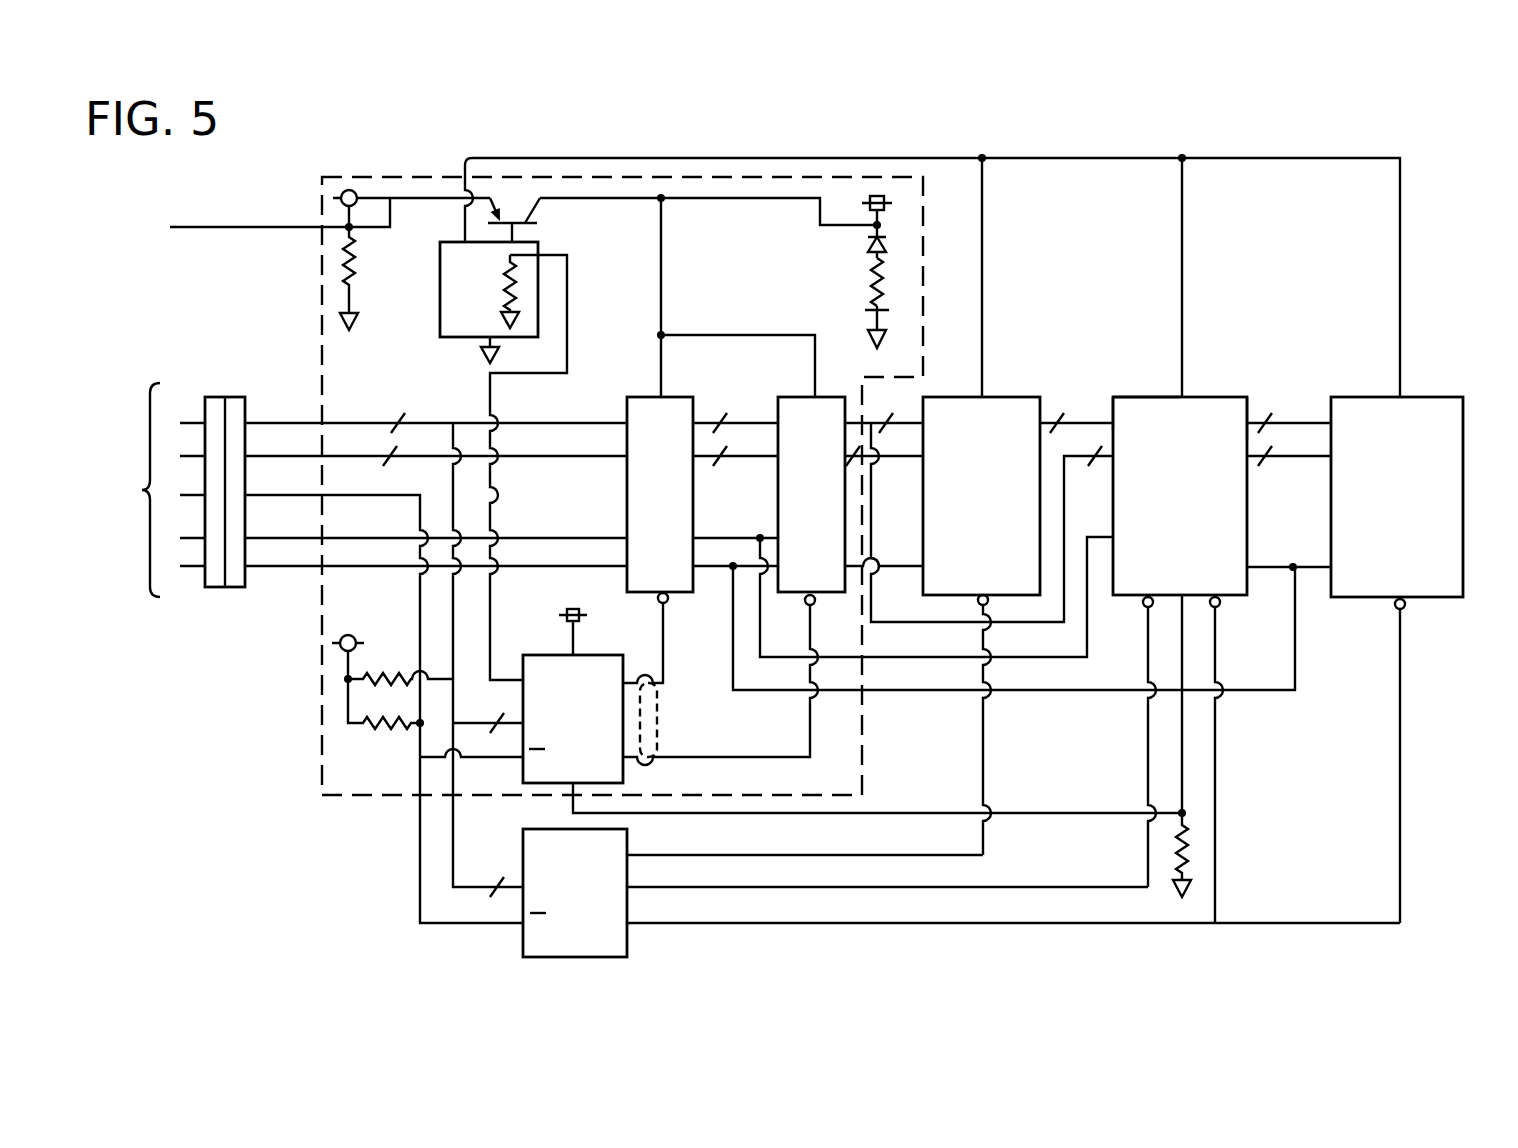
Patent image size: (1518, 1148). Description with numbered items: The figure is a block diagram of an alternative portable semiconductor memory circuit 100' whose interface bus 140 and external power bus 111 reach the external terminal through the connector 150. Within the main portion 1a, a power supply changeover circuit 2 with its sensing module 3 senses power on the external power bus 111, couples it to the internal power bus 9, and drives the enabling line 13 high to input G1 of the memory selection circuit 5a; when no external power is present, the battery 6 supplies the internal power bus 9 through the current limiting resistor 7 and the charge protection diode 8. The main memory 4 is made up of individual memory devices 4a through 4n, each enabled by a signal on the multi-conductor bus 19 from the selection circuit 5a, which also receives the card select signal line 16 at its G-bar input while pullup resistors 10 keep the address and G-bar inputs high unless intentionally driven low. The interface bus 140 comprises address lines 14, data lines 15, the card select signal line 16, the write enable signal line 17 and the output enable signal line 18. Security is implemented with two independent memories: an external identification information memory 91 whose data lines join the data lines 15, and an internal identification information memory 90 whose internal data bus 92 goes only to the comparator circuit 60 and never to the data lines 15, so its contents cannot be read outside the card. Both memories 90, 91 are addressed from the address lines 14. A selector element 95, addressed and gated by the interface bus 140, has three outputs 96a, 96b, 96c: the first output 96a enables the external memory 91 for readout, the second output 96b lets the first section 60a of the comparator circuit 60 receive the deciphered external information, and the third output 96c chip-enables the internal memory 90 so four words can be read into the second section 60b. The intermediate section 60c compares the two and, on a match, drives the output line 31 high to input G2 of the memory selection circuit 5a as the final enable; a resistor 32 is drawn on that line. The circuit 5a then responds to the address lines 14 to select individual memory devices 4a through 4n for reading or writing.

The main portion 1a is at (397, 173).
The power supply changeover circuit 2 is at (548, 206).
The sensing module 3 is at (440, 300).
The main memory 4 is at (734, 555).
The semiconductor memory device 4a is at (668, 393).
The semiconductor memory device 4n is at (798, 393).
The memory selection circuit 5a is at (586, 654).
The battery 6 is at (864, 312).
The current limiting resistor 7 is at (866, 282).
The charge protection diode 8 is at (866, 246).
The internal power bus 9 is at (750, 198).
The pullup resistors 10 is at (383, 672).
The enabling line 13 is at (567, 298).
The address lines 14 is at (260, 421).
The data lines 15 is at (253, 455).
The card select signal line 16 is at (253, 494).
The write enable signal line 17 is at (253, 537).
The output enable signal line 18 is at (258, 569).
The multi-conductor bus 19 is at (660, 718).
The output line 31 is at (1185, 645).
The resistor 32 is at (1190, 852).
The comparator circuit 60 is at (1219, 604).
The first section 60a is at (1150, 393).
The second section 60b is at (1250, 410).
The intermediate section 60c is at (1190, 385).
The internal identification information memory 90 is at (1422, 395).
The external identification information memory 91 is at (995, 395).
The internal data bus 92 is at (1305, 462).
The selector element 95 is at (521, 943).
The first output 96a is at (755, 853).
The second output 96b is at (755, 887).
The third output 96c is at (755, 922).
The memory circuit 100' is at (932, 247).
The external power bus 111 is at (228, 222).
The interface bus 140 is at (123, 490).
The connector 150 is at (228, 393).